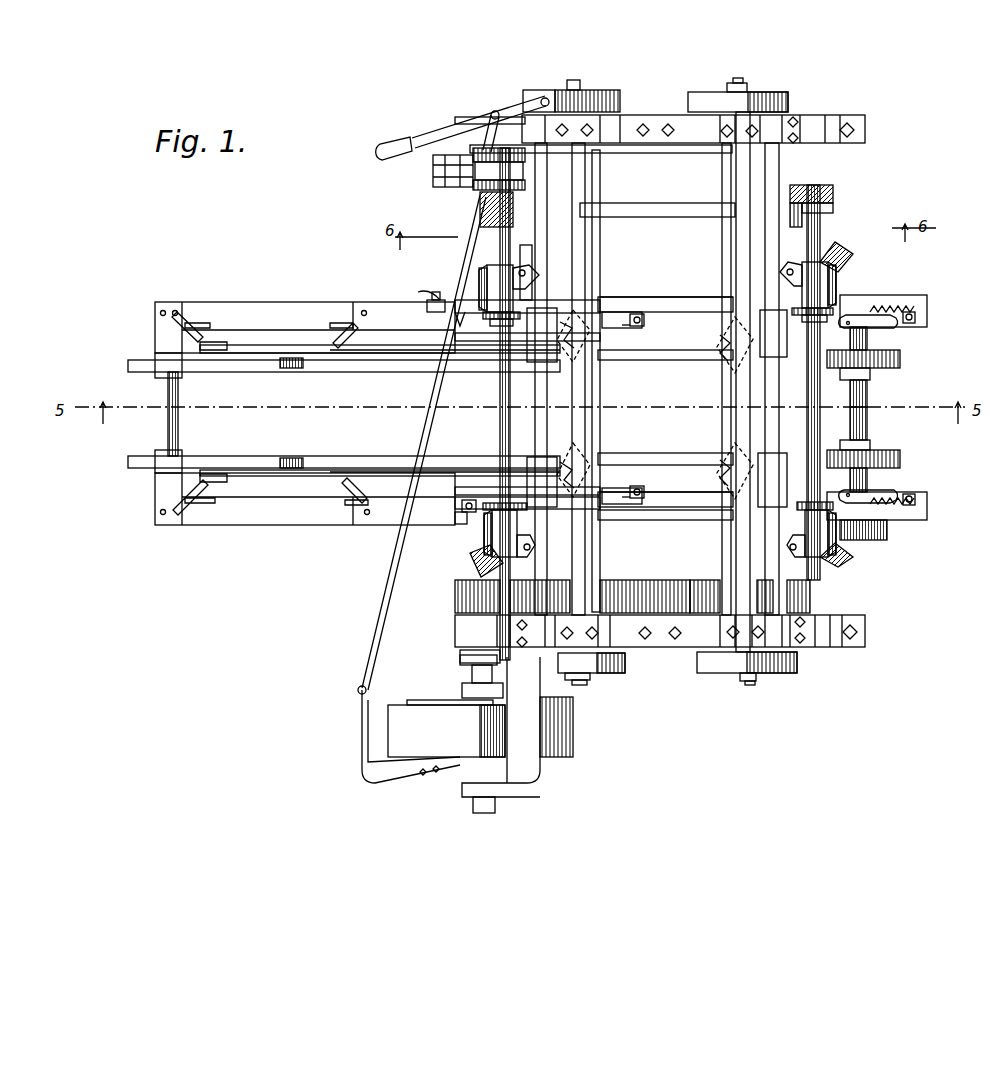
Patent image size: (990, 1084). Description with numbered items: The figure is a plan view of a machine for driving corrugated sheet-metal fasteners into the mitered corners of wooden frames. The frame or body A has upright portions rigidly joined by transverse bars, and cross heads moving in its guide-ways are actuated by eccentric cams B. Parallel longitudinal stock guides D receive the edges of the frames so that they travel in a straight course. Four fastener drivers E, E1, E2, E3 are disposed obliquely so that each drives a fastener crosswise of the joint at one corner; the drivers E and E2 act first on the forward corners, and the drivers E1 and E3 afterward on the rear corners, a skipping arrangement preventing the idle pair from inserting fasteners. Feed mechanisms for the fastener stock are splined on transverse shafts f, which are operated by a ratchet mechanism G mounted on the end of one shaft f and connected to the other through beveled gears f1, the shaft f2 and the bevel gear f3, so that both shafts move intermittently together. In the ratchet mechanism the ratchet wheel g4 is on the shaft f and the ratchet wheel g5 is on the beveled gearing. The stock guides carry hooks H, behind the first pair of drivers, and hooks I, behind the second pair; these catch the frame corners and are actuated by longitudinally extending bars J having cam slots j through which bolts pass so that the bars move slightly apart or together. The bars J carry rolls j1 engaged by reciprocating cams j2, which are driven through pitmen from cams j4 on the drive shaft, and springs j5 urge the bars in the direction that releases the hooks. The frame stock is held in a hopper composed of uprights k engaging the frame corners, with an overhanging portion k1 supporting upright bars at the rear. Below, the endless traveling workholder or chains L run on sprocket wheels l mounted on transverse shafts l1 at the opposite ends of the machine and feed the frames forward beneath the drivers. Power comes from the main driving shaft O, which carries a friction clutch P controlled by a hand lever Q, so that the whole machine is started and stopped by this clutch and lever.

The frame or body A is at (662, 96).
The eccentric cams B is at (591, 676).
The stock guides D is at (397, 330).
The fastener driver E is at (596, 362).
The fastener driver E1 is at (722, 365).
The fastener driver E2 is at (598, 452).
The fastener driver E3 is at (724, 451).
The ratchet mechanism G is at (466, 187).
The ratchet wheel g4 is at (506, 155).
The ratchet wheel g5 is at (470, 205).
The hooks H is at (622, 300).
The hooks I is at (888, 330).
The bars J is at (684, 320).
The cam slots j is at (646, 322).
The rolls j1 is at (428, 305).
The reciprocating cams j2 is at (420, 297).
The cams j4 is at (466, 520).
The springs j5 is at (900, 300).
The uprights k is at (338, 330).
The overhanging portion k1 is at (180, 312).
The endless traveling workholder or chains L is at (140, 368).
The sprocket wheels l is at (185, 376).
The transverse shafts l1 is at (180, 405).
The main driving shaft O is at (470, 548).
The friction clutch P is at (430, 715).
The hand lever Q is at (437, 140).
The transverse shafts f is at (500, 395).
The beveled gears f1 is at (532, 268).
The shaft f2 is at (638, 217).
The bevel gear f3 is at (832, 197).